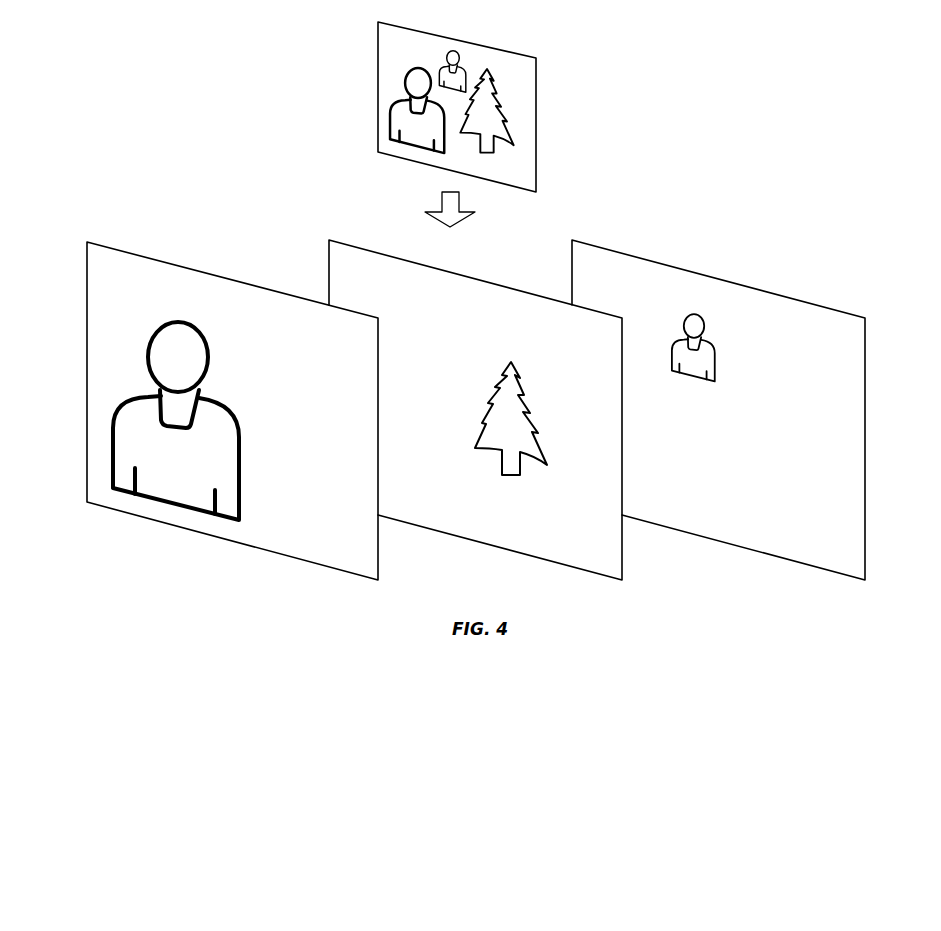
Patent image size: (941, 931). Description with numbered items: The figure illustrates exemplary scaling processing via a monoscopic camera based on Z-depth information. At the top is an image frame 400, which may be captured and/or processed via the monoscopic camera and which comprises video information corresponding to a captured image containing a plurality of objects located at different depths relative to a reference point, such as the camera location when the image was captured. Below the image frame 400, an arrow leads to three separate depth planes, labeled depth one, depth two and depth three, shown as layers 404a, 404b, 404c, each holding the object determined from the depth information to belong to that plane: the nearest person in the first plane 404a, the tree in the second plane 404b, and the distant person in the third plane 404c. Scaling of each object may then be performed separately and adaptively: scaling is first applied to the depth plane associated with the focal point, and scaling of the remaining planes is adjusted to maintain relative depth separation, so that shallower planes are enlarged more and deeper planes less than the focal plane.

The image frame 400 is at (539, 117).
The first depth layer 404a is at (381, 545).
The second depth layer 404b is at (624, 545).
The third depth layer 404c is at (867, 545).